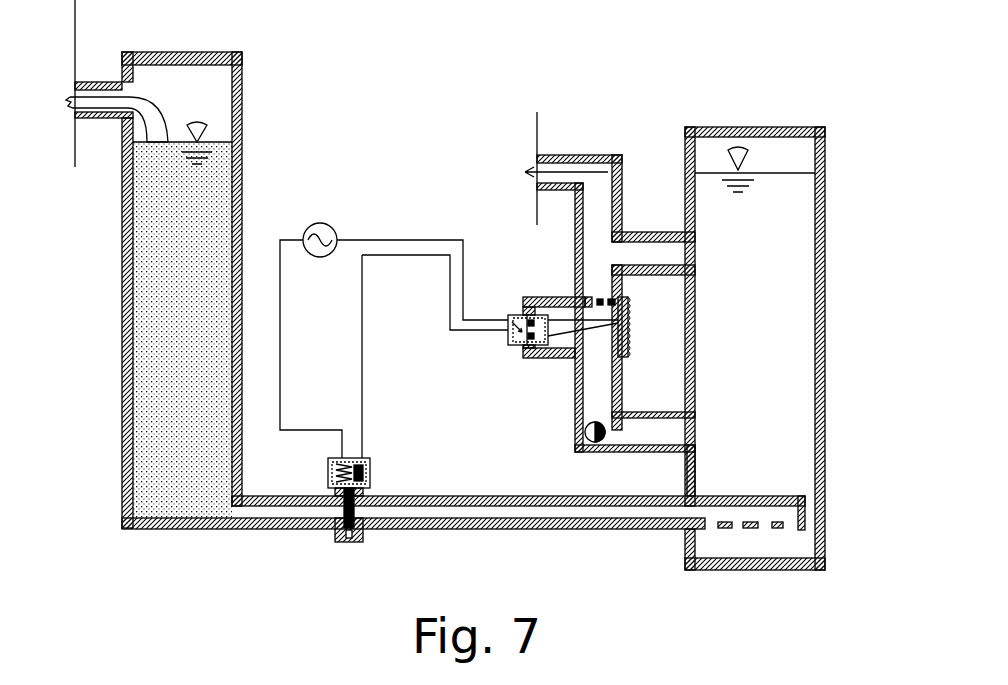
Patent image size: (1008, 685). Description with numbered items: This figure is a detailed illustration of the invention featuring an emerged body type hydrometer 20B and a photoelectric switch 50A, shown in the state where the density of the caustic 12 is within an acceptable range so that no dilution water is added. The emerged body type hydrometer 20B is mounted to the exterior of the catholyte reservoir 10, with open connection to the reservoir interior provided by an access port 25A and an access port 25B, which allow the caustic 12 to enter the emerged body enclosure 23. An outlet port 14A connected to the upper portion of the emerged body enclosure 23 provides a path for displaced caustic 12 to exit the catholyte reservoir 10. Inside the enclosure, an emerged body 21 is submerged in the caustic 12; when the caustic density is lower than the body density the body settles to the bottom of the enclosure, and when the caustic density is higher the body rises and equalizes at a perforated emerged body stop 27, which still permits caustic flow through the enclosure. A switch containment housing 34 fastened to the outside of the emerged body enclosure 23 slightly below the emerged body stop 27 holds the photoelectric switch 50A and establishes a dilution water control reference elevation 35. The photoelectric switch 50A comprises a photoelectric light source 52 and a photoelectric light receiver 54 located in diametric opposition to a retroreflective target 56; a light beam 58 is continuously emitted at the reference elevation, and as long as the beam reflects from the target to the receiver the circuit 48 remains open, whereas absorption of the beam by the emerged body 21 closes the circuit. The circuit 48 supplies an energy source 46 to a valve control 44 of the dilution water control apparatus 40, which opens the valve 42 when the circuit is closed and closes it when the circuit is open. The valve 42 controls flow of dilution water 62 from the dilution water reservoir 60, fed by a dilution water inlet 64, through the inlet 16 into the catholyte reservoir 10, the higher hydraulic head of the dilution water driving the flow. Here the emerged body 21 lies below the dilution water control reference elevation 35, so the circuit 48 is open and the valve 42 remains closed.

The catholyte reservoir 10 is at (825, 168).
The caustic 12 is at (778, 282).
The outlet port 14A is at (578, 168).
The inlet 16 is at (827, 520).
The emerged body type hydrometer 20B is at (563, 438).
The emerged body 21 is at (590, 430).
The emerged body enclosure 23 is at (577, 393).
The access port 25A is at (648, 250).
The access port 25B is at (653, 428).
The emerged body stop 27 is at (610, 300).
The switch containment housing 34 is at (562, 298).
The dilution water control reference elevation 35 is at (437, 322).
The dilution water control apparatus 40 is at (323, 367).
The valve 42 is at (333, 532).
The valve control 44 is at (372, 468).
The energy source 46 is at (319, 222).
The circuit 48 is at (360, 335).
The photoelectric switch 50A is at (548, 296).
The photoelectric light source 52 is at (523, 300).
The photoelectric light receiver 54 is at (515, 342).
The retroreflective target 56 is at (630, 340).
The light beam 58 is at (553, 297).
The dilution water reservoir 60 is at (125, 312).
The dilution water 62 is at (173, 330).
The dilution water inlet 64 is at (97, 80).